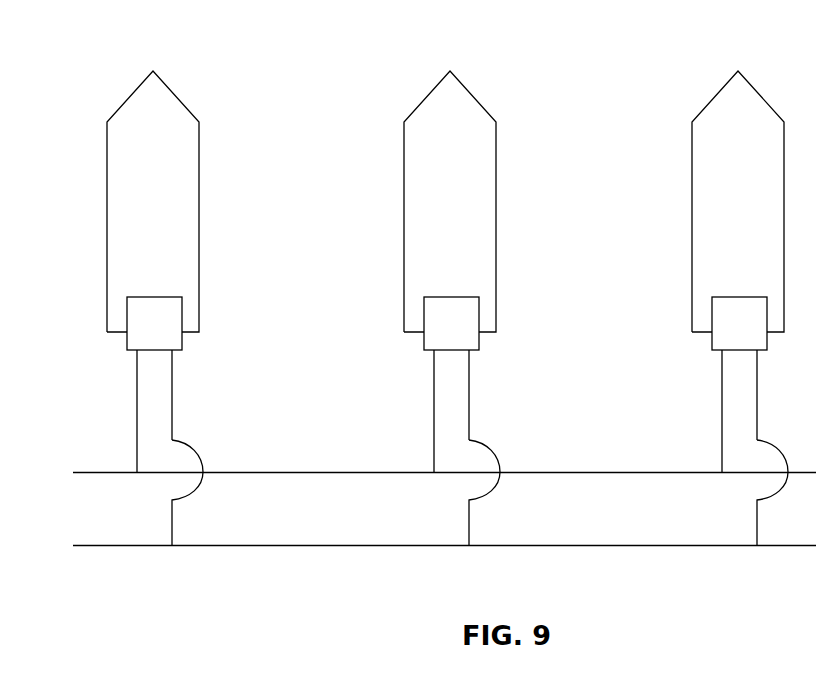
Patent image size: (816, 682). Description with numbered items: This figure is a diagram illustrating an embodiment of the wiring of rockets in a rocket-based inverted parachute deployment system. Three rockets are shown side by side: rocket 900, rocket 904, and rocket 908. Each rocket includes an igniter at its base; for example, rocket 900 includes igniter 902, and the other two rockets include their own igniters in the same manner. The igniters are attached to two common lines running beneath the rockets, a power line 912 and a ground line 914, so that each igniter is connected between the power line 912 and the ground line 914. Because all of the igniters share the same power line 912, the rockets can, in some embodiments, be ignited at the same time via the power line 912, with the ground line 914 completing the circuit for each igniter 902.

The rocket 900 is at (132, 92).
The rocket 904 is at (427, 97).
The rocket 908 is at (712, 98).
The igniter 902 is at (127, 315).
The power line 912 is at (633, 472).
The ground line 914 is at (632, 547).